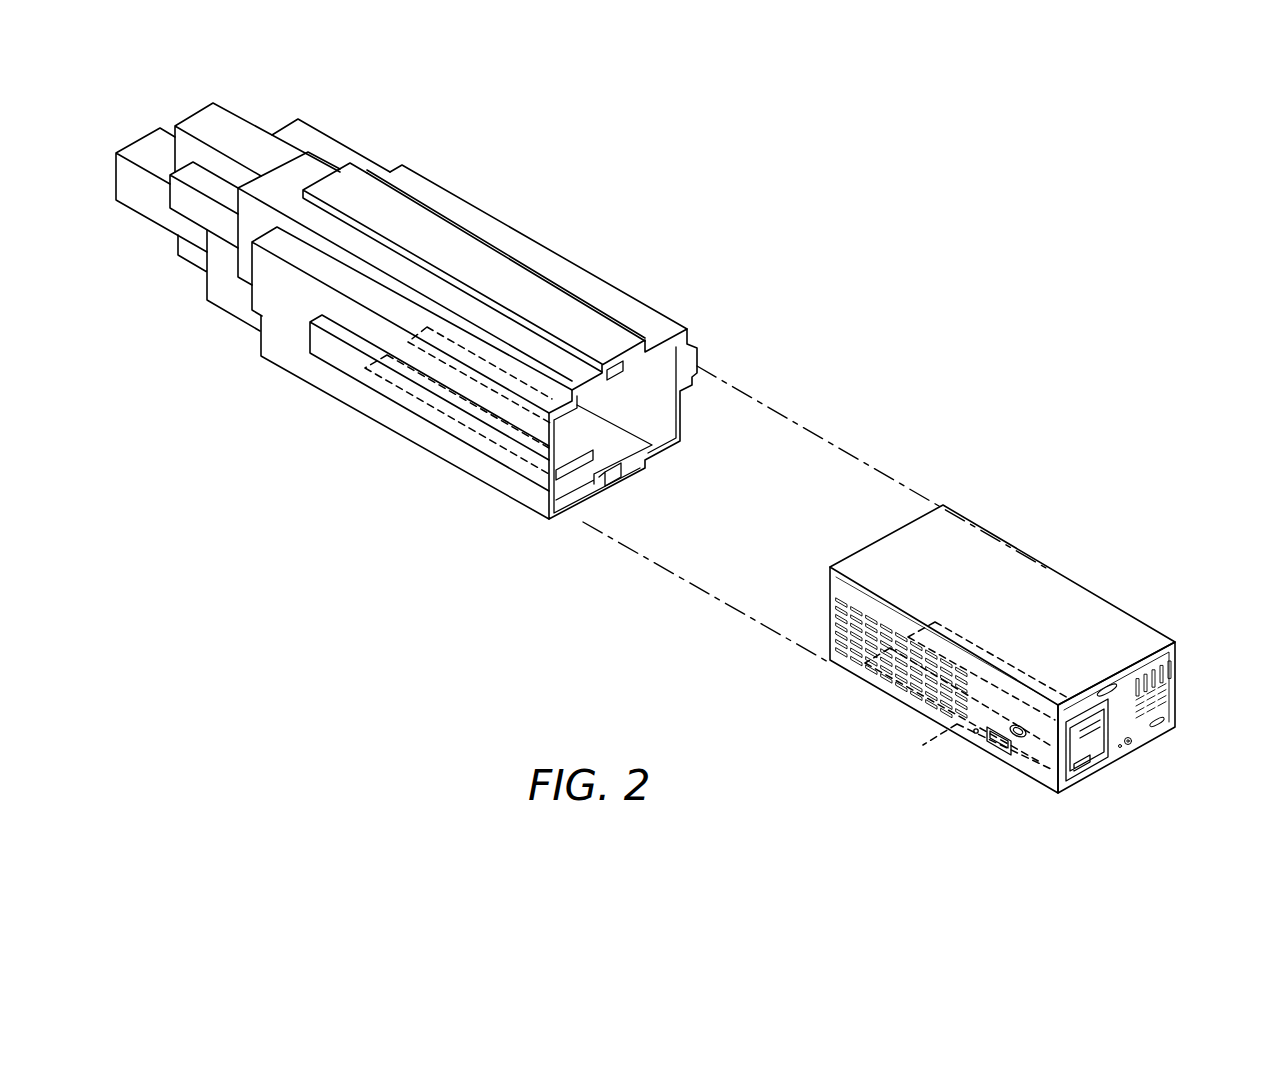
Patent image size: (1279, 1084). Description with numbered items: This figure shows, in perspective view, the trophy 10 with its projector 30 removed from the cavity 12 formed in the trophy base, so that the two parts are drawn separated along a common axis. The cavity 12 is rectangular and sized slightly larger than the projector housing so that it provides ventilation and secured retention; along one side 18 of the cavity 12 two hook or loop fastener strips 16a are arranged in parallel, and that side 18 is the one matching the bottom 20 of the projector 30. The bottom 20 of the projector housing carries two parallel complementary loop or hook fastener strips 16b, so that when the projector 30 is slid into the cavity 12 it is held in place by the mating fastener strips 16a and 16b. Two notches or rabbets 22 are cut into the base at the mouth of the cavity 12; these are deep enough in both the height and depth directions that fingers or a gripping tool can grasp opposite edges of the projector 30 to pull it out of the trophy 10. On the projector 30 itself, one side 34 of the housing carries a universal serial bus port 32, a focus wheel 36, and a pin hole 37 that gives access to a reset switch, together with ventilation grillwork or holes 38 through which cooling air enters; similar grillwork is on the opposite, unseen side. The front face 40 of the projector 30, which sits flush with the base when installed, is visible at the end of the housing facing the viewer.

The trophy 10 is at (466, 212).
The cavity 12 is at (663, 379).
The hook or loop fastener strips 16a is at (618, 444).
The complementary loop or hook fastener strips 16b is at (923, 745).
The side of the cavity 18 is at (657, 443).
The bottom of the projector 20 is at (1123, 757).
The notches or rabbets 22 is at (620, 367).
The projector 30 is at (1082, 590).
The universal serial bus (USB) port 32 is at (1000, 748).
The side of the projector housing 34 is at (835, 591).
The focus wheel 36 is at (1020, 740).
The pin hole 37 is at (975, 732).
The ventilation grillwork or holes 38 is at (836, 638).
The front face of the projector 40 is at (1172, 657).